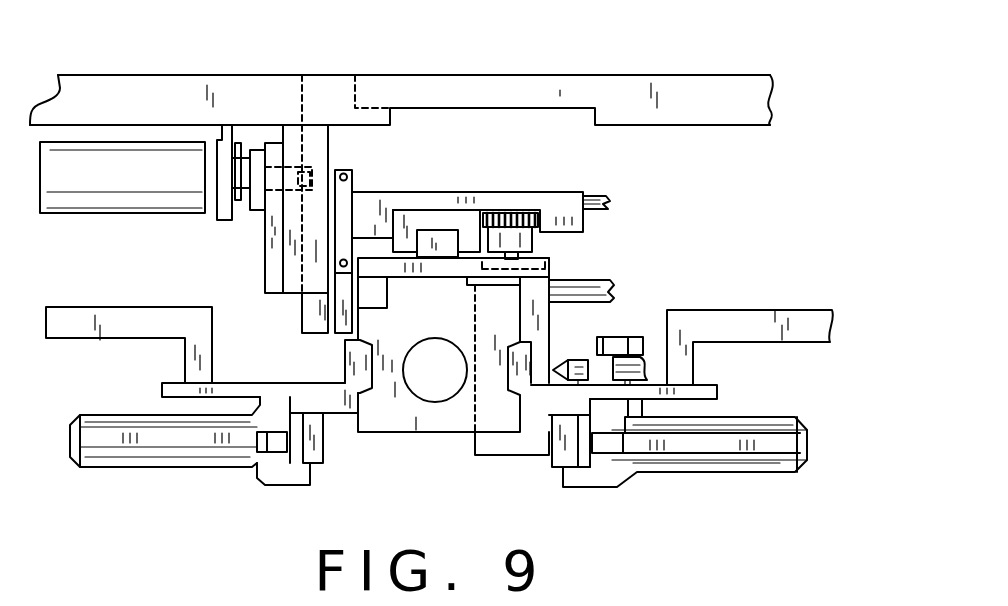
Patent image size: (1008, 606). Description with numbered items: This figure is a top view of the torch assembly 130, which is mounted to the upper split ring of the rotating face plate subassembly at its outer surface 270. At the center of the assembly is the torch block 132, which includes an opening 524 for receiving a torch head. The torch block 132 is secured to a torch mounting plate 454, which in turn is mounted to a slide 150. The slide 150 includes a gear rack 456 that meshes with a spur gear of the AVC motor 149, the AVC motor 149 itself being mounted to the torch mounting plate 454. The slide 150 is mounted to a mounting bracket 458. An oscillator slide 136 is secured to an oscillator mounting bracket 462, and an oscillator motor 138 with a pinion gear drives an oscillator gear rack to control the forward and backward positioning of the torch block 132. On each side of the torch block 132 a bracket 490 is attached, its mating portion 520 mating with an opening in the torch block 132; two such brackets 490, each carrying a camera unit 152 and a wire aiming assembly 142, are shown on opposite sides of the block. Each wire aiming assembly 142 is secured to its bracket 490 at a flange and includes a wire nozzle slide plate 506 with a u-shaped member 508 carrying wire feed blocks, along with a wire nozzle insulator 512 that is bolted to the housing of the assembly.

The torch assembly 130 is at (620, 337).
The torch block 132 is at (507, 378).
The oscillator slide 136 is at (305, 143).
The oscillator motor 138 is at (113, 190).
The wire aiming assembly 142 is at (95, 442).
The AVC motor 149 is at (527, 457).
The slide 150 is at (428, 208).
The camera unit 152 is at (141, 335).
The outer surface 270 is at (494, 95).
The torch mounting plate 454 is at (440, 262).
The gear rack 456 is at (584, 225).
The mounting bracket 458 is at (523, 200).
The oscillator mounting bracket 462 is at (375, 207).
The bracket 490 is at (330, 400).
The wire nozzle slide plate 506 is at (312, 453).
The u-shaped member 508 is at (283, 478).
The wire nozzle insulator 512 is at (273, 442).
The mating portion 520 is at (372, 388).
The opening 524 is at (430, 352).